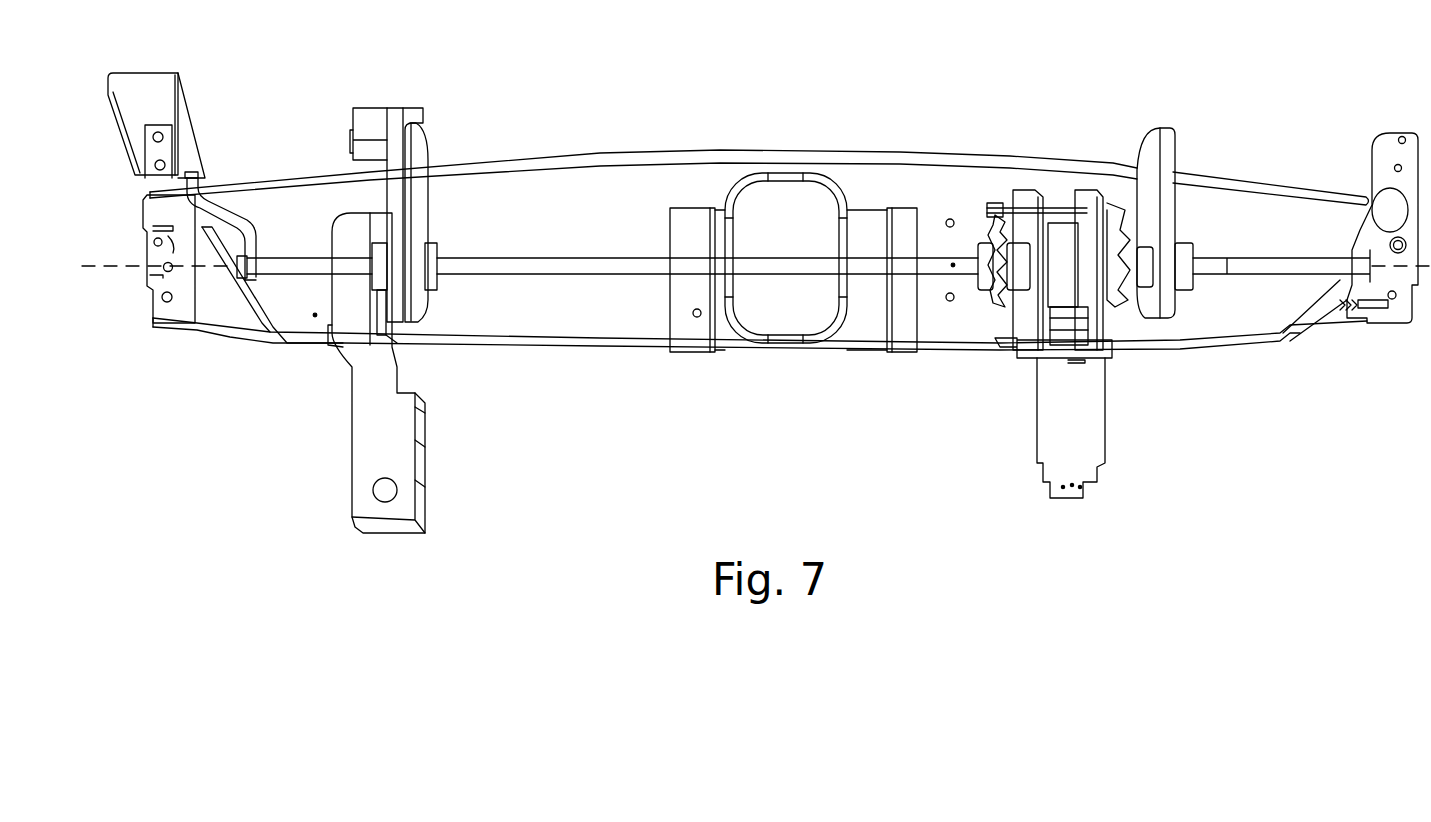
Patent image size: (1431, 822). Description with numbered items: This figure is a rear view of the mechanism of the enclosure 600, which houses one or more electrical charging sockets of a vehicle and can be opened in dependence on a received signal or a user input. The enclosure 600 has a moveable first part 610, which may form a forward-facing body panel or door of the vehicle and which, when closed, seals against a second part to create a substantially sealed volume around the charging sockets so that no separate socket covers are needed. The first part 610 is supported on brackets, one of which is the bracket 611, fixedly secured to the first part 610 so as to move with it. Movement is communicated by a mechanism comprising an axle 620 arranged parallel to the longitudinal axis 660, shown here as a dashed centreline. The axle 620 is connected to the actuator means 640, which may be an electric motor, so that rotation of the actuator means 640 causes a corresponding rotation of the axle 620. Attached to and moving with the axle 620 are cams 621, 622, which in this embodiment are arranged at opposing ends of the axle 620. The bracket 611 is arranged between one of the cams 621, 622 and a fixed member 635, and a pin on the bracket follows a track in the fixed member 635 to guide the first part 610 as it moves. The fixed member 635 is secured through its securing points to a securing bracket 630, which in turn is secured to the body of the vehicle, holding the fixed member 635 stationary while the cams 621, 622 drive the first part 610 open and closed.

The enclosure 600 is at (715, 108).
The first part 610 is at (603, 330).
The bracket 611 is at (388, 118).
The axle 620 is at (775, 267).
The cam 621 is at (430, 157).
The cam 622 is at (1153, 148).
The securing bracket 630 is at (428, 460).
The fixed member 635 is at (388, 308).
The actuator means 640 is at (1095, 428).
The longitudinal axis 660 is at (117, 268).